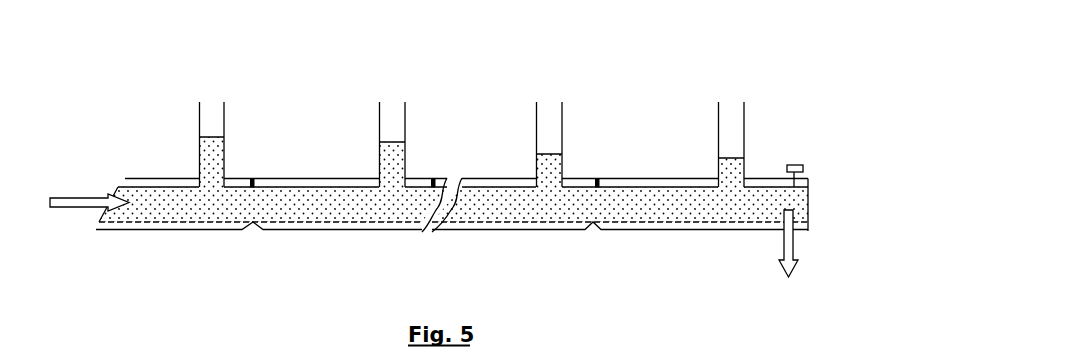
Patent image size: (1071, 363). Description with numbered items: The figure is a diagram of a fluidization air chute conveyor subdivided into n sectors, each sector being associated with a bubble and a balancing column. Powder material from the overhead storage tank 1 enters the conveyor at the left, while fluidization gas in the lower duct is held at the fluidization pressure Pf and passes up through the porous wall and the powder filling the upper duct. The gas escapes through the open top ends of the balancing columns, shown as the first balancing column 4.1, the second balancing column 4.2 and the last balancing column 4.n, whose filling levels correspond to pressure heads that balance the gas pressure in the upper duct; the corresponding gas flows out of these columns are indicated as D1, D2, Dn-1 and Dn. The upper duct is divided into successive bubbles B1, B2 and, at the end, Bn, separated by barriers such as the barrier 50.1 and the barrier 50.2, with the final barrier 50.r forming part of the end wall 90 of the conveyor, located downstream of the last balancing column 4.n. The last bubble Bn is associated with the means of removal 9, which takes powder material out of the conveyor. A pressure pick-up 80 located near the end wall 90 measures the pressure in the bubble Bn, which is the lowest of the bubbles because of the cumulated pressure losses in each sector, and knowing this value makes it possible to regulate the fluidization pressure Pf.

The overhead storage tank 1 is at (89, 195).
The balancing column 4.1 is at (227, 122).
The balancing column 4.2 is at (408, 118).
The last balancing column 4.n is at (745, 127).
The first flow restriction 50.1 is at (252, 178).
The second flow restriction 50.2 is at (434, 178).
The retentate flow restriction 50.r is at (808, 182).
The pressure pick-up 80 is at (797, 162).
The end wall 90 is at (808, 205).
The means of removal 9 is at (779, 245).
The fluidization pressure Pf is at (151, 231).
The bubble B1 is at (148, 177).
The bubble B2 is at (324, 177).
The bubble Bn is at (675, 177).
The balancing column D1 is at (212, 125).
The balancing column D2 is at (393, 123).
The (n-1)th permeate flow Dn-1 is at (549, 122).
The balancing column Dn is at (731, 127).